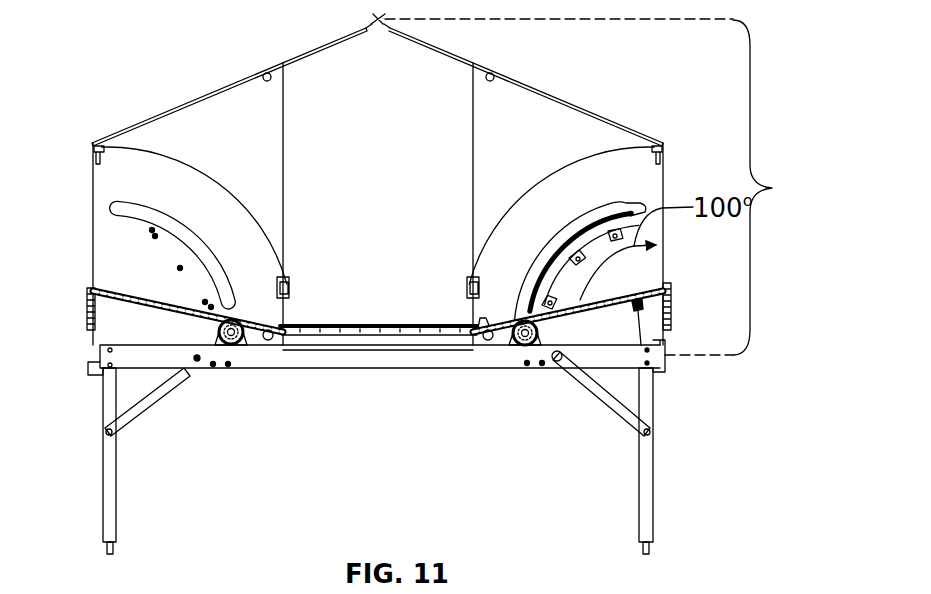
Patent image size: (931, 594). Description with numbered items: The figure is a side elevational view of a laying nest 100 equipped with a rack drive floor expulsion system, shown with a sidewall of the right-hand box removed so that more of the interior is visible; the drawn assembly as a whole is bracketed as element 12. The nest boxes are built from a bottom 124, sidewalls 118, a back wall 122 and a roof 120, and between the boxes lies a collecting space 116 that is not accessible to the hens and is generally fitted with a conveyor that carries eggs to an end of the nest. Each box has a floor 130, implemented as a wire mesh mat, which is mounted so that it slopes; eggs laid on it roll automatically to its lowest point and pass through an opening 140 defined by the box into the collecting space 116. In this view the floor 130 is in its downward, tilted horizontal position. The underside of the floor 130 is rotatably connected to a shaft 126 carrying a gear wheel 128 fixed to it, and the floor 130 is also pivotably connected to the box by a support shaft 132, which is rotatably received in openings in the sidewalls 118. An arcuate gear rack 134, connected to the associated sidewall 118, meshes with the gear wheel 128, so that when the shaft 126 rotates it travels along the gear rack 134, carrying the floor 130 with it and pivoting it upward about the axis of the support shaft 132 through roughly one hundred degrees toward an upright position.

The portable shelter assembly 12 is at (600, 187).
The laying nest 100 is at (593, 93).
The roof 120 is at (637, 128).
The sidewalls 118 is at (162, 278).
The collecting space 116 is at (393, 256).
The back wall 122 is at (565, 163).
The arcuate gear rack 134 is at (561, 257).
The floor 130 is at (488, 316).
The opening 140 is at (476, 323).
The gear wheel 128 is at (520, 346).
The shaft 126 is at (531, 346).
The bottom 124 is at (603, 346).
The support shaft 132 is at (642, 345).